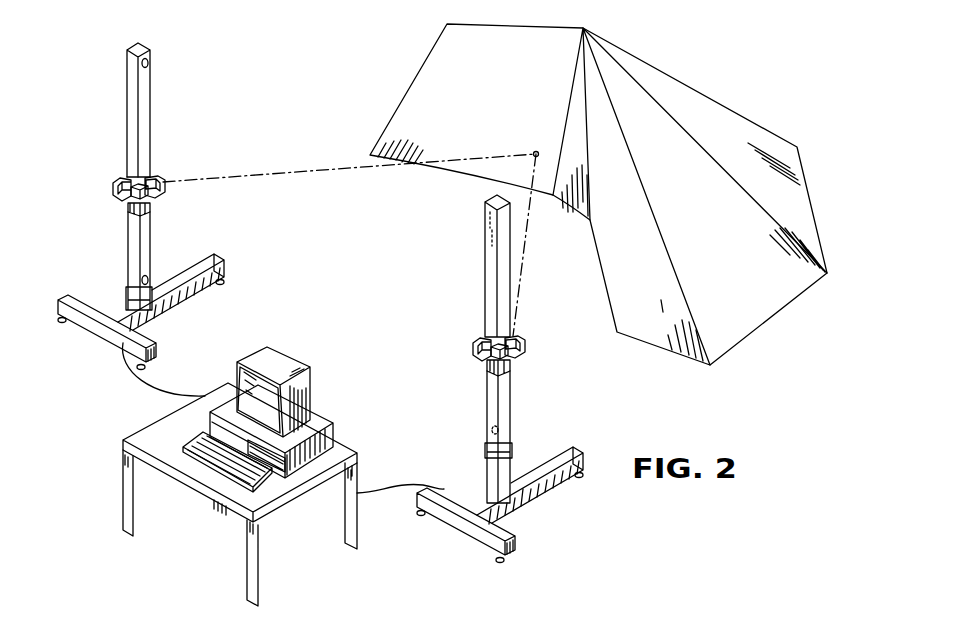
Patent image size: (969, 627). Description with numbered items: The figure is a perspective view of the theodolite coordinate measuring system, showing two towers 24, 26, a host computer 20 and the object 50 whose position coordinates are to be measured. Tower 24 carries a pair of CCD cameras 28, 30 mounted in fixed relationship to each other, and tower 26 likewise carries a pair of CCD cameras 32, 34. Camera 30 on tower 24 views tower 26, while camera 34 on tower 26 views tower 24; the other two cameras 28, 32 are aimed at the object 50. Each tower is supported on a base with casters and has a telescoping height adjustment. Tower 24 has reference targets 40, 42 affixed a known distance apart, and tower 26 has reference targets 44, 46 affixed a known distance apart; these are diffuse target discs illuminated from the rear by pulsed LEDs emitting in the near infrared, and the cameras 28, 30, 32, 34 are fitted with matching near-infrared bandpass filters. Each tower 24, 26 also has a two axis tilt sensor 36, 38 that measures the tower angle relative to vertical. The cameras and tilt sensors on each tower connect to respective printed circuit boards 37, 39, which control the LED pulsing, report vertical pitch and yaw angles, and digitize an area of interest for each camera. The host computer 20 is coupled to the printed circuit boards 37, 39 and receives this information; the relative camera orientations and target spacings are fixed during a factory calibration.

The host computer 20 is at (323, 411).
The tower 24 is at (139, 204).
The tower 26 is at (496, 379).
The CCD camera 28 is at (163, 178).
The CCD camera 30 is at (160, 195).
The CCD camera 32 is at (518, 336).
The CCD camera 34 is at (474, 341).
The two axis tilt sensor 36 is at (114, 181).
The printed circuit board 37 is at (131, 204).
The two axis tilt sensor 38 is at (520, 351).
The printed circuit board 39 is at (488, 366).
The reference target 40 is at (149, 63).
The reference target 42 is at (151, 278).
The reference target 44 is at (486, 222).
The reference target 46 is at (493, 430).
The object 50 is at (536, 150).